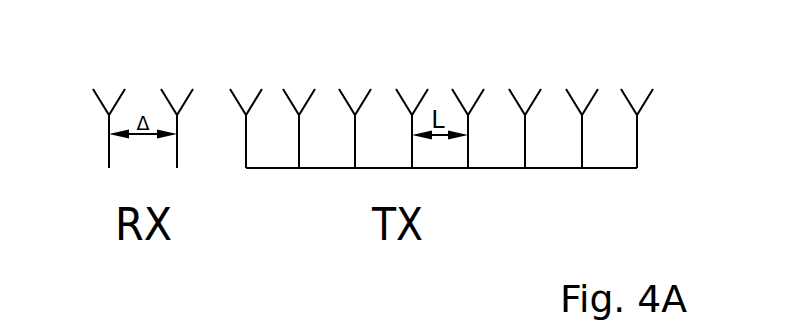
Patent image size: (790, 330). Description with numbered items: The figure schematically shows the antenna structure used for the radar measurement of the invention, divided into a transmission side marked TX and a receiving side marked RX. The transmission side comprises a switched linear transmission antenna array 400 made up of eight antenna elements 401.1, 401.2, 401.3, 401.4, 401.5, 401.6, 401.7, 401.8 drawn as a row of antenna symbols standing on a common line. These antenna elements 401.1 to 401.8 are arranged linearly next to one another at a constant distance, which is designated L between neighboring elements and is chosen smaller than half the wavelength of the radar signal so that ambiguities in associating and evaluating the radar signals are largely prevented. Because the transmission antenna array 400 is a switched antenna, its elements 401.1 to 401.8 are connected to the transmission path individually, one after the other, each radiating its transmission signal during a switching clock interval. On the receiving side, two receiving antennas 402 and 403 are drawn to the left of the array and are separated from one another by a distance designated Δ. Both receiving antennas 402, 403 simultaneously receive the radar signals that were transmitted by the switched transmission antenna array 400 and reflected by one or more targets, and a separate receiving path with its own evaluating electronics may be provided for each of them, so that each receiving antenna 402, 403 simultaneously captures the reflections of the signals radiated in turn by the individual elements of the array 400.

The switched linear transmission antenna array 400 is at (584, 203).
The antenna element 401.1 is at (242, 103).
The antenna element 401.2 is at (295, 103).
The antenna element 401.3 is at (351, 103).
The antenna element 401.4 is at (408, 103).
The antenna element 401.5 is at (464, 103).
The antenna element 401.6 is at (521, 103).
The antenna element 401.7 is at (578, 103).
The antenna element 401.8 is at (633, 103).
The receiving antenna 402 is at (102, 103).
The receiving antenna 403 is at (170, 103).